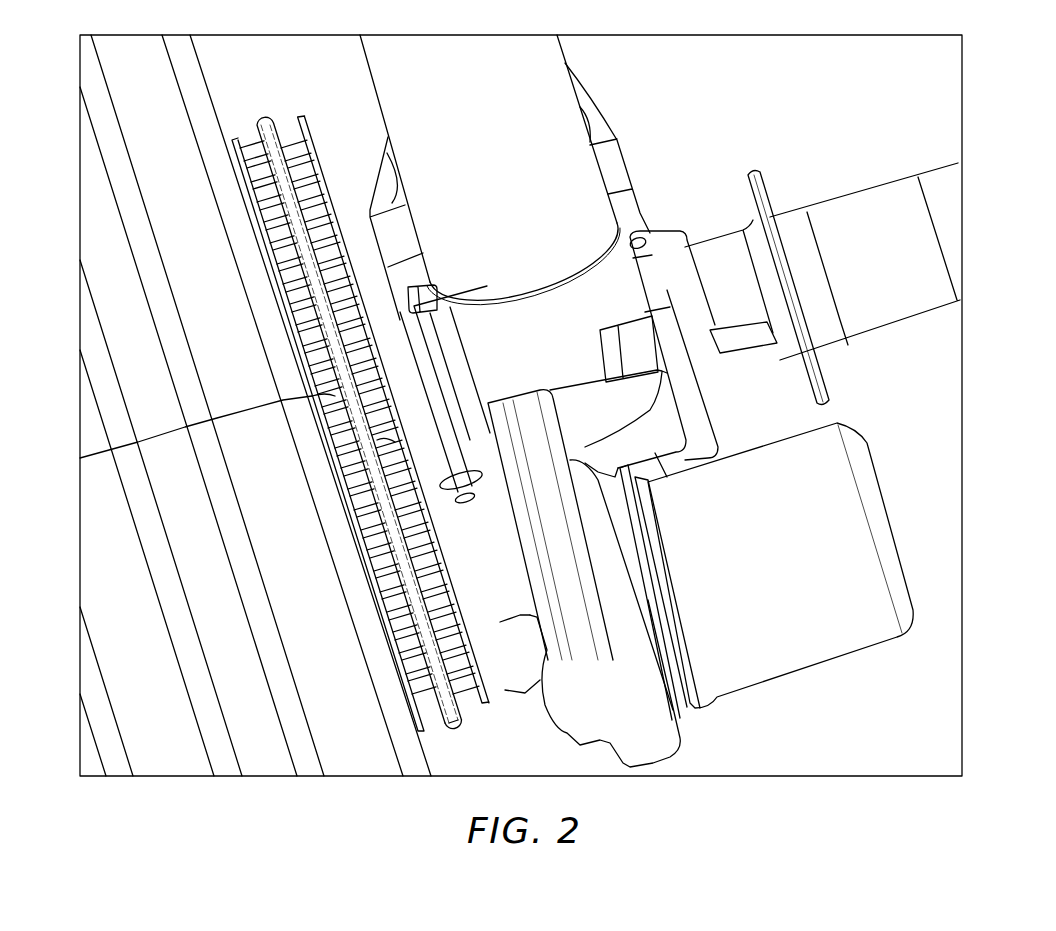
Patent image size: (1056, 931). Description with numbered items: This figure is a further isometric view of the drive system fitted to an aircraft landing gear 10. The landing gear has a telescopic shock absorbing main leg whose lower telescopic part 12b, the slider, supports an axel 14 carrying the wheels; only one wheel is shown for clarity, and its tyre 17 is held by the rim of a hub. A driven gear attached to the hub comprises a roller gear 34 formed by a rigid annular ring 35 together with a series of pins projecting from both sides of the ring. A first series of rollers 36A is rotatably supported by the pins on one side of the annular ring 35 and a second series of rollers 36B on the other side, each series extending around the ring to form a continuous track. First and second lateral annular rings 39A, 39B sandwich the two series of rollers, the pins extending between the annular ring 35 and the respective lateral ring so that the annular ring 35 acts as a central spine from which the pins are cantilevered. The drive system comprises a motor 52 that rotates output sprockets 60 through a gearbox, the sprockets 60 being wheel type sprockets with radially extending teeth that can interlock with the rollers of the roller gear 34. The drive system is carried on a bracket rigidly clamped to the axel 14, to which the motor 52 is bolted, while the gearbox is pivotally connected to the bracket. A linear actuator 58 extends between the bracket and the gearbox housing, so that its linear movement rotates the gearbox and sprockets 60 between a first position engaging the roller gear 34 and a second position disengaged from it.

The landing gear 10 is at (978, 62).
The lower telescopic part 12b is at (366, 64).
The axel 14 is at (878, 192).
The tyre 17 is at (92, 565).
The roller gear 34 is at (440, 733).
The annular ring 35 is at (303, 242).
The first series of rollers 36A is at (250, 168).
The second series of rollers 36B is at (296, 151).
The first lateral annular ring 39A is at (323, 410).
The second lateral annular ring 39B is at (377, 440).
The motor 52 is at (798, 663).
The linear actuator 58 is at (440, 314).
The output sprockets 60 is at (450, 702).